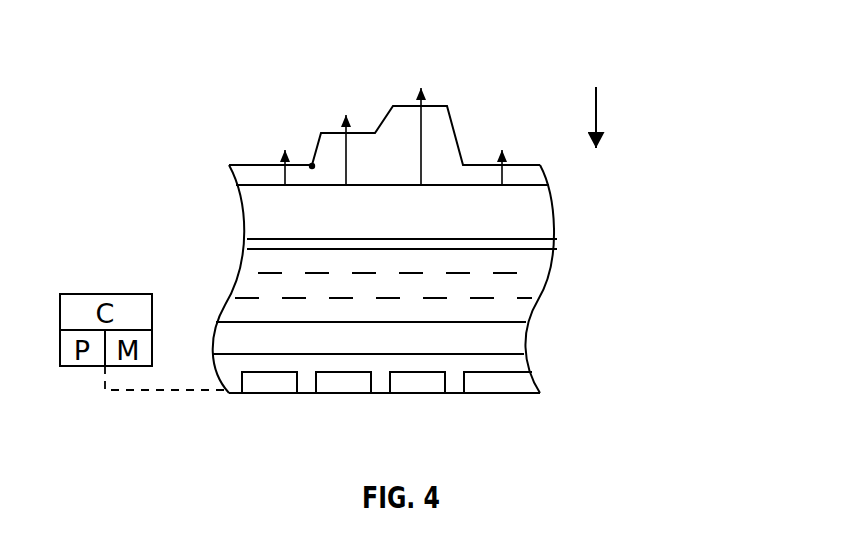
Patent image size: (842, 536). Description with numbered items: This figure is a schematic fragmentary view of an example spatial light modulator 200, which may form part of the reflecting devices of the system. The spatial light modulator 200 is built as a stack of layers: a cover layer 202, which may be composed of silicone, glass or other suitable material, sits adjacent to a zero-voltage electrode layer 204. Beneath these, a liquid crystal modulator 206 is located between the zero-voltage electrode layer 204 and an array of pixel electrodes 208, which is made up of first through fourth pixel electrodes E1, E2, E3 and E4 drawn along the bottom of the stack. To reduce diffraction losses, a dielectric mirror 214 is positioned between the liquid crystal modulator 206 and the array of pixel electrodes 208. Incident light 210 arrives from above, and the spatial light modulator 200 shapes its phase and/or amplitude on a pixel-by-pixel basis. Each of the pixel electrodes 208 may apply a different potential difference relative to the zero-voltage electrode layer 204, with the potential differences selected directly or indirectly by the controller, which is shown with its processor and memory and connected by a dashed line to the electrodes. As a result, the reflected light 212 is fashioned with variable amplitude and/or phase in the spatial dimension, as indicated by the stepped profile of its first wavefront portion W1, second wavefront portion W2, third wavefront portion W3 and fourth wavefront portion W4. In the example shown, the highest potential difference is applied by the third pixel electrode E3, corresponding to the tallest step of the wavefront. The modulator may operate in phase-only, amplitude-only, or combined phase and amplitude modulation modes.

The spatial light modulator 200 is at (673, 278).
The cover layer 202 is at (563, 212).
The zero-voltage electrode layer 204 is at (560, 249).
The liquid crystal modulator 206 is at (545, 290).
The array of pixel electrodes 208 is at (428, 399).
The incident light 210 is at (598, 118).
The reflected light 212 is at (240, 135).
The dielectric mirror 214 is at (532, 337).
The first wavefront portion W1 is at (287, 137).
The second wavefront portion W2 is at (347, 103).
The third wavefront portion W3 is at (423, 80).
The fourth wavefront portion W4 is at (500, 143).
The first pixel electrode E1 is at (268, 395).
The second pixel electrode E2 is at (345, 395).
The third pixel electrode E3 is at (420, 395).
The fourth pixel electrode E4 is at (498, 395).